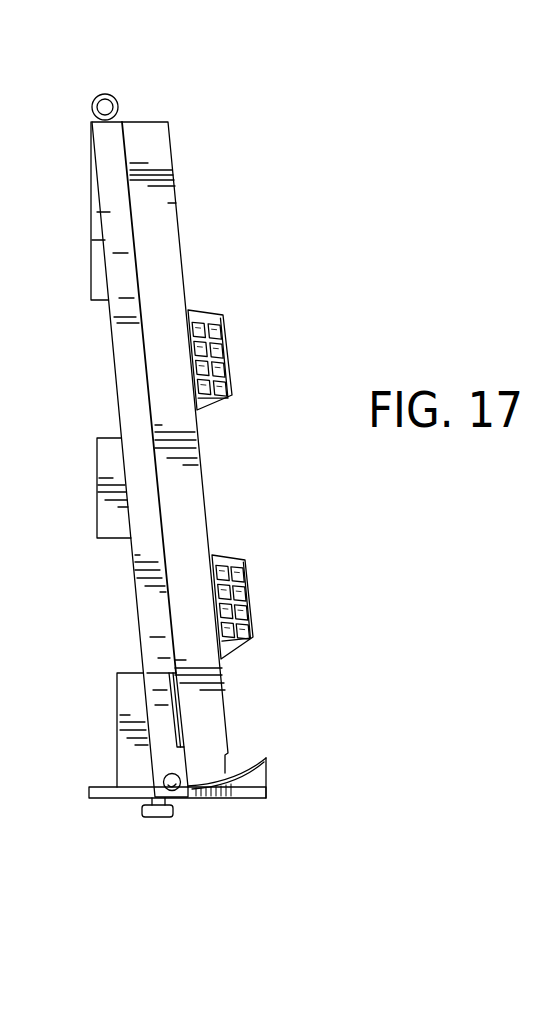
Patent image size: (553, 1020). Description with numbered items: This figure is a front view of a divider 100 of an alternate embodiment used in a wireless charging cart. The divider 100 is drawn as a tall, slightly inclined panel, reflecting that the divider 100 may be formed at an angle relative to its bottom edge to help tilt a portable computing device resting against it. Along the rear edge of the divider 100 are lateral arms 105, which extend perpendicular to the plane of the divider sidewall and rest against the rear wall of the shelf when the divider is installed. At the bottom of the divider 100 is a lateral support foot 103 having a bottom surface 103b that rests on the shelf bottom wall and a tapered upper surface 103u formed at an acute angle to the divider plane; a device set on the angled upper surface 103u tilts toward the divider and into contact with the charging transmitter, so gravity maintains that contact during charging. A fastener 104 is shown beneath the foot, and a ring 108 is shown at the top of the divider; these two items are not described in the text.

The divider 100 is at (180, 183).
The hanging ring 108 is at (110, 96).
The lateral arms 105 is at (227, 345).
The lateral support feet 103 is at (228, 771).
The upper surface 103u is at (255, 761).
The bottom surface 103b is at (263, 798).
The fastening bolt 104 is at (160, 817).